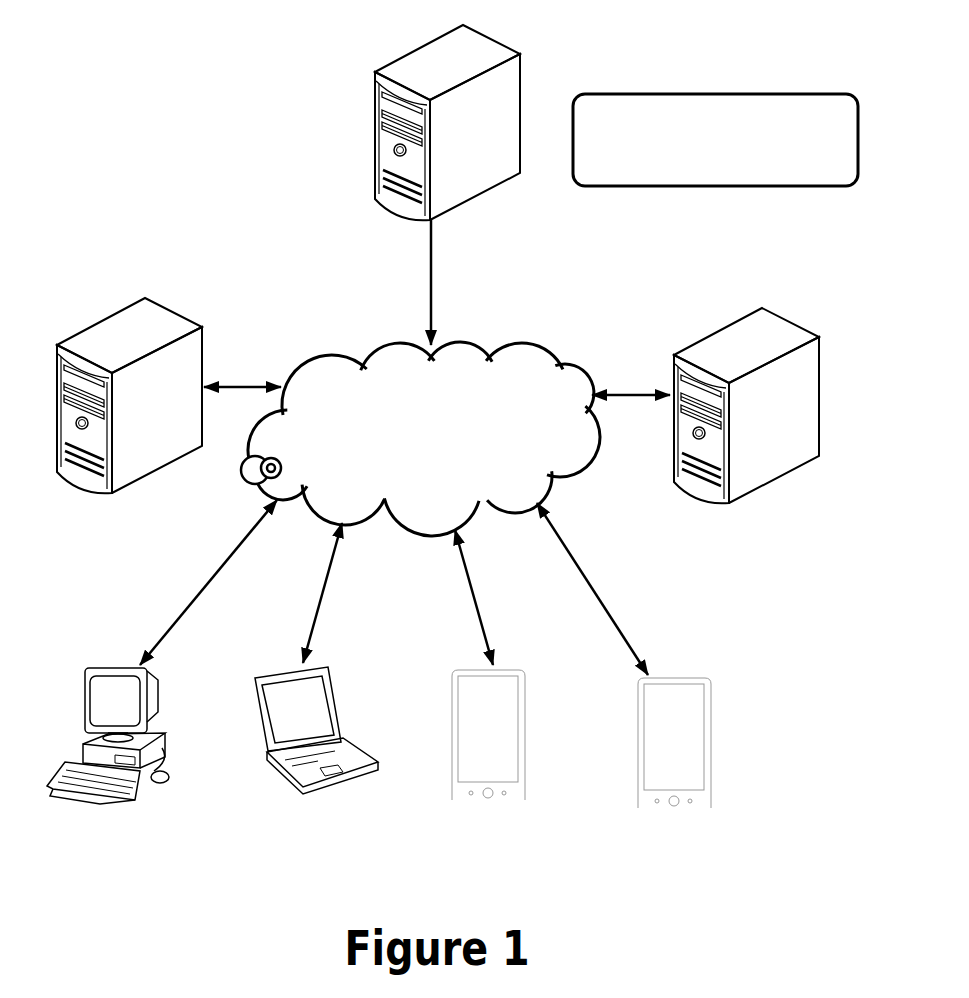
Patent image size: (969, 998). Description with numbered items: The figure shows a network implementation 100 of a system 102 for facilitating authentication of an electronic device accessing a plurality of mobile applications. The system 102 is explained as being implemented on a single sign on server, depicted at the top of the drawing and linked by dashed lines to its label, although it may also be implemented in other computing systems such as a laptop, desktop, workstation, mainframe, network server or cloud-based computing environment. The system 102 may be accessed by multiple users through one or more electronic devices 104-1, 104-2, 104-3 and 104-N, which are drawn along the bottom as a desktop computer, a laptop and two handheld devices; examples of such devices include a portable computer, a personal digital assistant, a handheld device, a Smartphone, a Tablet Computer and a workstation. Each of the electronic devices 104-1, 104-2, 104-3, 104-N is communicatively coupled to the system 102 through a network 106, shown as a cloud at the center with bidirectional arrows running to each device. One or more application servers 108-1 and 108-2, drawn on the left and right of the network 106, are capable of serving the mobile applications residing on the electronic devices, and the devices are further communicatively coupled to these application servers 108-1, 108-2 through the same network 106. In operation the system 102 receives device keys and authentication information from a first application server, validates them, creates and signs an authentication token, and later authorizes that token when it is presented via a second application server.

The network implementation 100 is at (168, 118).
The system 102 is at (518, 136).
The network 106 is at (396, 478).
The application server 108-1 is at (73, 477).
The application server 108-2 is at (750, 500).
The electronic device 104-1 is at (93, 793).
The electronic device 104-2 is at (337, 777).
The electronic device 104-3 is at (507, 798).
The electronic device 104-N is at (684, 806).